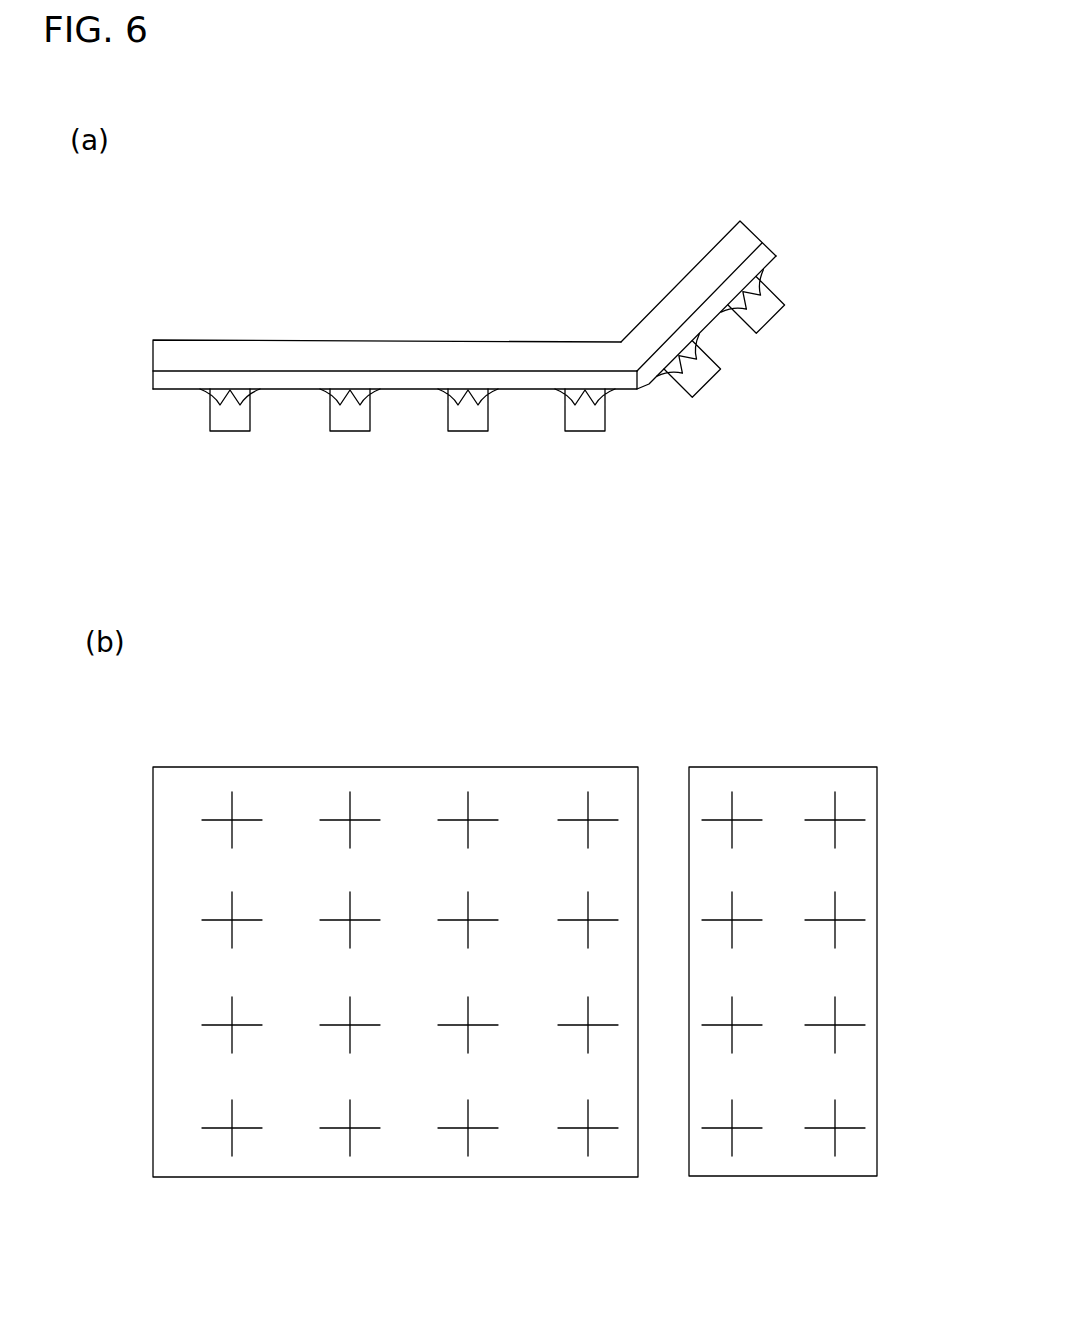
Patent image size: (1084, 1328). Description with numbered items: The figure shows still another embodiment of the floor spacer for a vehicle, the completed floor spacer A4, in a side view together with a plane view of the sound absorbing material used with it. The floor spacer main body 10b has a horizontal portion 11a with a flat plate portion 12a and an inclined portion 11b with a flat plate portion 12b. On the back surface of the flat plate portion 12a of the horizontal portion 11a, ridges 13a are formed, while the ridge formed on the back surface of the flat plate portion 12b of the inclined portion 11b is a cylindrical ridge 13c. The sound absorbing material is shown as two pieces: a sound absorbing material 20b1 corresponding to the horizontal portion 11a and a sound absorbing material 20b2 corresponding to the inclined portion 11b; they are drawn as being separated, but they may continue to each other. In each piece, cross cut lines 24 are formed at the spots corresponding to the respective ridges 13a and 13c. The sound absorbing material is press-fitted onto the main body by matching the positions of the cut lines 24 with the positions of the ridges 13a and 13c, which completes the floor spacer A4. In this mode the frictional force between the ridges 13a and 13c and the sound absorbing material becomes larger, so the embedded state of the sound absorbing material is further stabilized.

The floor spacer for a vehicle A4 is at (395, 213).
The floor spacer main body 10b is at (454, 325).
The horizontal portion 11a is at (248, 324).
The flat plate portion 12a is at (360, 341).
The inclined portion 11b is at (661, 277).
The flat plate portion 12b is at (712, 262).
The sound absorbing material 20b1 is at (302, 407).
The sound absorbing material 20b2 is at (762, 260).
The ridge 13a is at (355, 418).
The cylindrical ridge 13c is at (700, 380).
The cross cut lines 24 is at (232, 800).